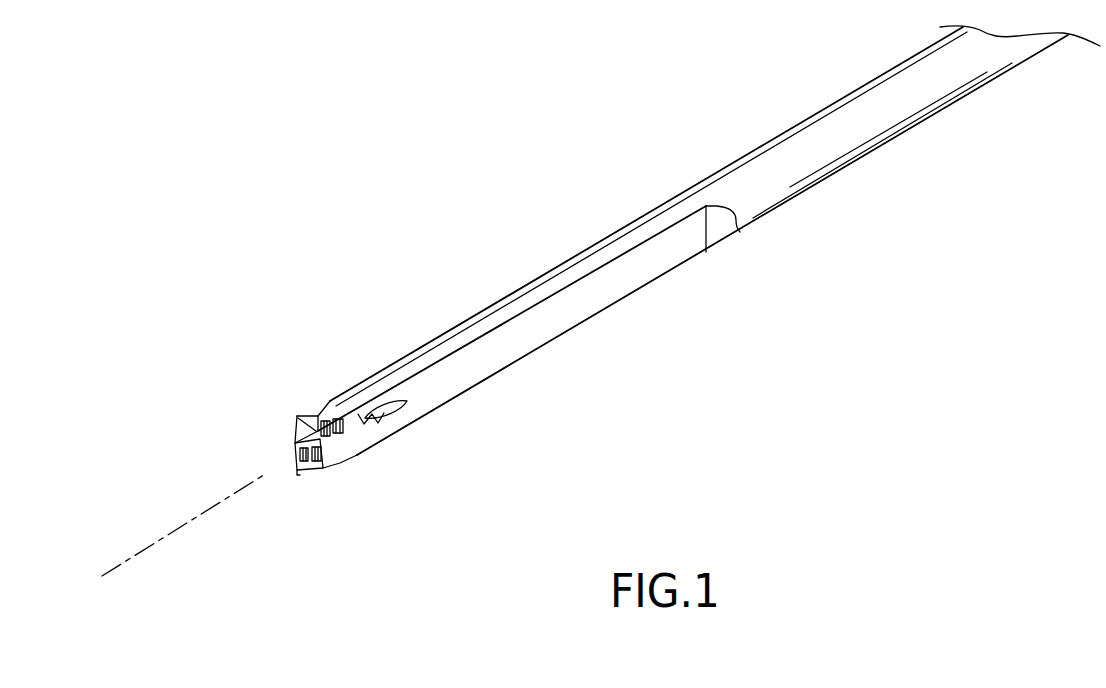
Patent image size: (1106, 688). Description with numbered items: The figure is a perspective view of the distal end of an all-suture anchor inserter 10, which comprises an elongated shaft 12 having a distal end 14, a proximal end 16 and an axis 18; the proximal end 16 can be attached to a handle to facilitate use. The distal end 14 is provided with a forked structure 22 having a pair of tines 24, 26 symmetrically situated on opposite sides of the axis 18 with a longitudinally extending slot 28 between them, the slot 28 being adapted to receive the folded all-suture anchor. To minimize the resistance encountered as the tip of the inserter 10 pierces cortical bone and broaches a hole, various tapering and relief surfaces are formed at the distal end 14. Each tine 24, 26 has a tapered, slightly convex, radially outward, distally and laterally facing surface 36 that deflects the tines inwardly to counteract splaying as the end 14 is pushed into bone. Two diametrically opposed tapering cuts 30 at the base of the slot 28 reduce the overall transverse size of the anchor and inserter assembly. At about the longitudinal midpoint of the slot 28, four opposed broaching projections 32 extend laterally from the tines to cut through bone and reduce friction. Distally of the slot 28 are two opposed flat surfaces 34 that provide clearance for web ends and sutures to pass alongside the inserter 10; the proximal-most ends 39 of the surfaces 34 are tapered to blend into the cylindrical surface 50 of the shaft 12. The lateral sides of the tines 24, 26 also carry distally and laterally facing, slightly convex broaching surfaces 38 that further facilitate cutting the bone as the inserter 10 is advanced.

The inserter 10 is at (623, 230).
The elongated shaft 12 is at (852, 93).
The distal end 14 is at (332, 492).
The proximal end 16 is at (1050, 47).
The axis 18 is at (160, 541).
The forked structure 22 is at (330, 401).
The tine 24 is at (297, 437).
The tine 26 is at (298, 470).
The slot 28 is at (305, 470).
The tapering cut 30 is at (390, 408).
The broaching projection 32 is at (352, 414).
The flat surface 34 is at (575, 313).
The tapered surface 36 is at (300, 422).
The broaching surface 38 is at (326, 463).
The proximal-most end 39 is at (724, 224).
The cylindrical surface 50 is at (781, 193).